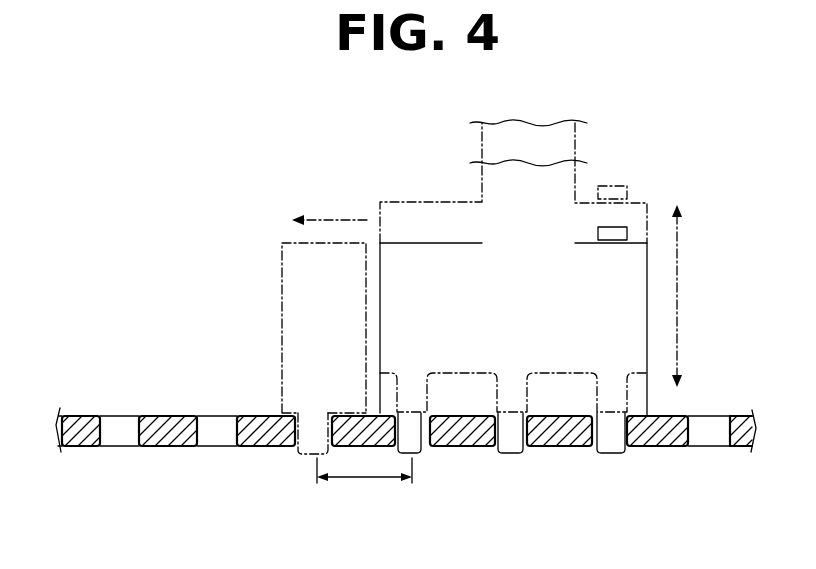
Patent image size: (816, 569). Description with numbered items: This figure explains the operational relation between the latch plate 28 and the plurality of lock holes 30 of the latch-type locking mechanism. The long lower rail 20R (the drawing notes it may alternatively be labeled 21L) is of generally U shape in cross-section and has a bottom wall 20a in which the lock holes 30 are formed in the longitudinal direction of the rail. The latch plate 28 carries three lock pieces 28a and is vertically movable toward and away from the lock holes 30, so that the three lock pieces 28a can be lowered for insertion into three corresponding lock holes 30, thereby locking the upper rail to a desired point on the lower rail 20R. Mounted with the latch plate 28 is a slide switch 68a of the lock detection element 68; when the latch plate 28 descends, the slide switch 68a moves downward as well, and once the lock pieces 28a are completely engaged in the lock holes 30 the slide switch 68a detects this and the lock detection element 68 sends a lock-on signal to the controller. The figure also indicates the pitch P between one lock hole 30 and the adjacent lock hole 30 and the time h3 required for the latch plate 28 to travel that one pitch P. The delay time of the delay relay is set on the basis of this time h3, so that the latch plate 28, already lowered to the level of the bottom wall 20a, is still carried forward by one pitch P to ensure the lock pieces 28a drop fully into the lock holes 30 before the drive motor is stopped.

The latch plate 28 is at (287, 242).
The lock pieces 28a is at (415, 387).
The lock holes 30 is at (100, 437).
The bottom wall 20a is at (162, 445).
The long lower rail 20R is at (398, 428).
The left guide rail 21L is at (406, 461).
The slide switch 68a is at (622, 185).
The lock detection element 68 is at (675, 182).
The time h3 is at (329, 206).
The pitch P is at (364, 481).